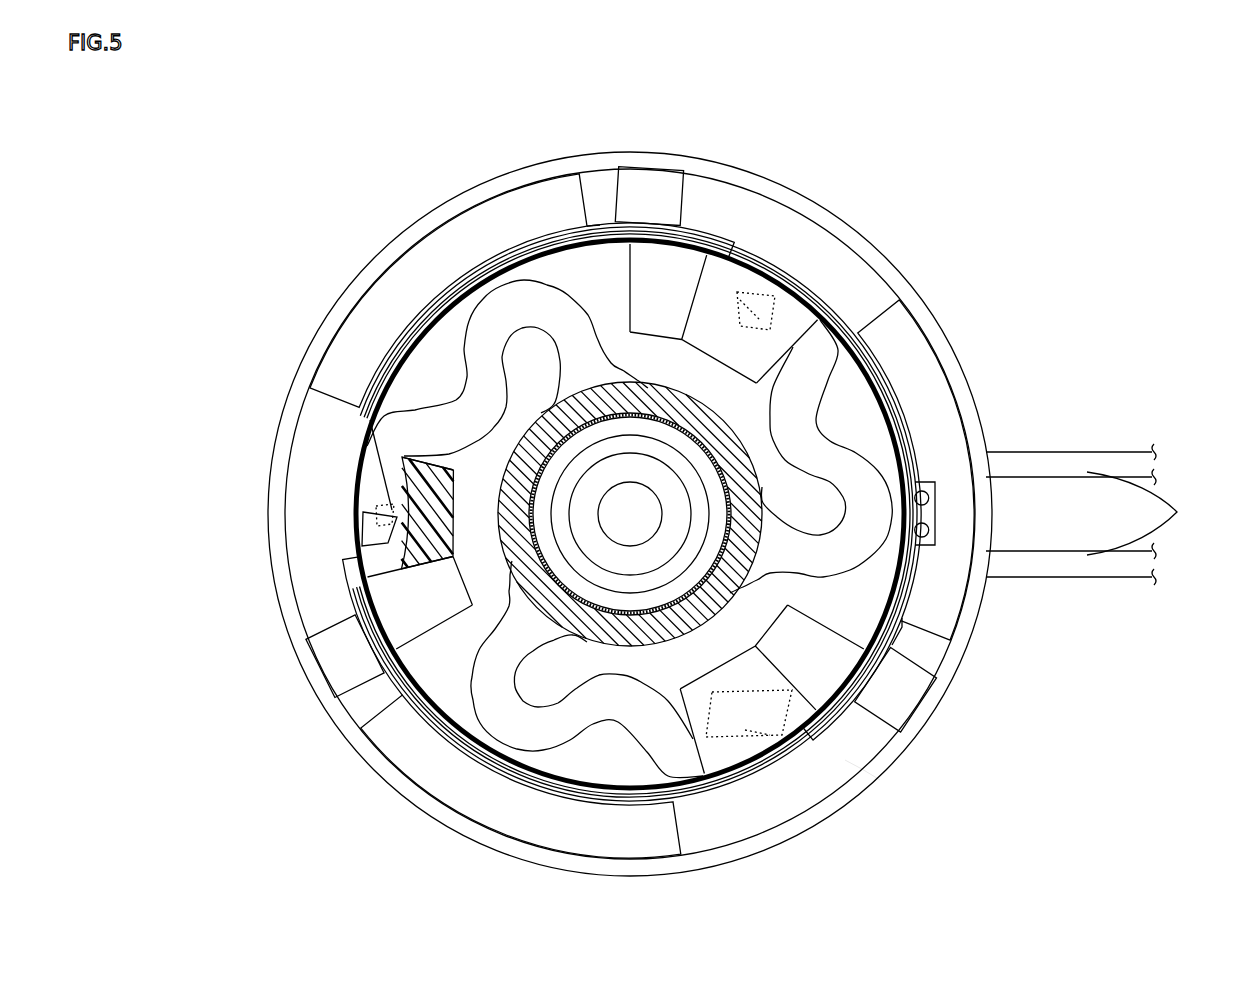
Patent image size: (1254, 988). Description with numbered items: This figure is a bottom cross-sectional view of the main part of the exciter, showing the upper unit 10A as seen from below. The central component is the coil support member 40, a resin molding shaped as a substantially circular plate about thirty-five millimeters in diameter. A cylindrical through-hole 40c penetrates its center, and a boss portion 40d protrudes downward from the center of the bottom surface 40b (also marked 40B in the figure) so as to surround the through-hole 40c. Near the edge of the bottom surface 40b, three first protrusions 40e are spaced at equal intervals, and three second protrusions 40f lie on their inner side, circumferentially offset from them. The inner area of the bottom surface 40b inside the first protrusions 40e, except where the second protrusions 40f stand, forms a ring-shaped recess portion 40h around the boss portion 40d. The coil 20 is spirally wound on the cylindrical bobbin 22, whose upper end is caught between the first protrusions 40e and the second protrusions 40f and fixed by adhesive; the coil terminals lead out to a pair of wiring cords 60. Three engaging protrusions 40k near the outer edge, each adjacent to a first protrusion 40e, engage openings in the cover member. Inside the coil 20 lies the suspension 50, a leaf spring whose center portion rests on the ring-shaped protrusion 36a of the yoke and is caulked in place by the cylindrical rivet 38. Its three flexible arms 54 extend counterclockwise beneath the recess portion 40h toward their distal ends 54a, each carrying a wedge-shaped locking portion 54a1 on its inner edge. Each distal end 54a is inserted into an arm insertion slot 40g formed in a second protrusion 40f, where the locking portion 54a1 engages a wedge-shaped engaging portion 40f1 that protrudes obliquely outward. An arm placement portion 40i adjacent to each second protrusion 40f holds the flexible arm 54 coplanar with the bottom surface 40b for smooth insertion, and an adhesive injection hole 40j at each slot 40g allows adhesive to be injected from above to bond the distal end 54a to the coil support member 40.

The upper unit 10A is at (970, 304).
The coil 20 is at (435, 733).
The bobbin 22 is at (464, 720).
The ring-shaped protrusion 36a is at (658, 638).
The rivet 38 is at (740, 505).
The coil support member 40 is at (420, 211).
The bottom surface 40b is at (857, 772).
The stator block 40B is at (912, 655).
The through-hole 40c is at (609, 521).
The boss portion 40d is at (626, 563).
The first protrusions 40e is at (945, 437).
The second protrusions 40f is at (508, 490).
The engaging portion 40f1 is at (792, 292).
The arm insertion slot 40g is at (768, 250).
The ring-shaped recess portion 40h is at (593, 287).
The arm placement portion 40i is at (600, 228).
The adhesive injection hole 40j is at (362, 545).
The engaging protrusions 40k is at (650, 185).
The suspension 50 is at (853, 432).
The flexible arms 54 is at (473, 345).
The distal end 54a is at (375, 475).
The locking portion 54a1 is at (447, 640).
The wiring cords 60 is at (1182, 513).